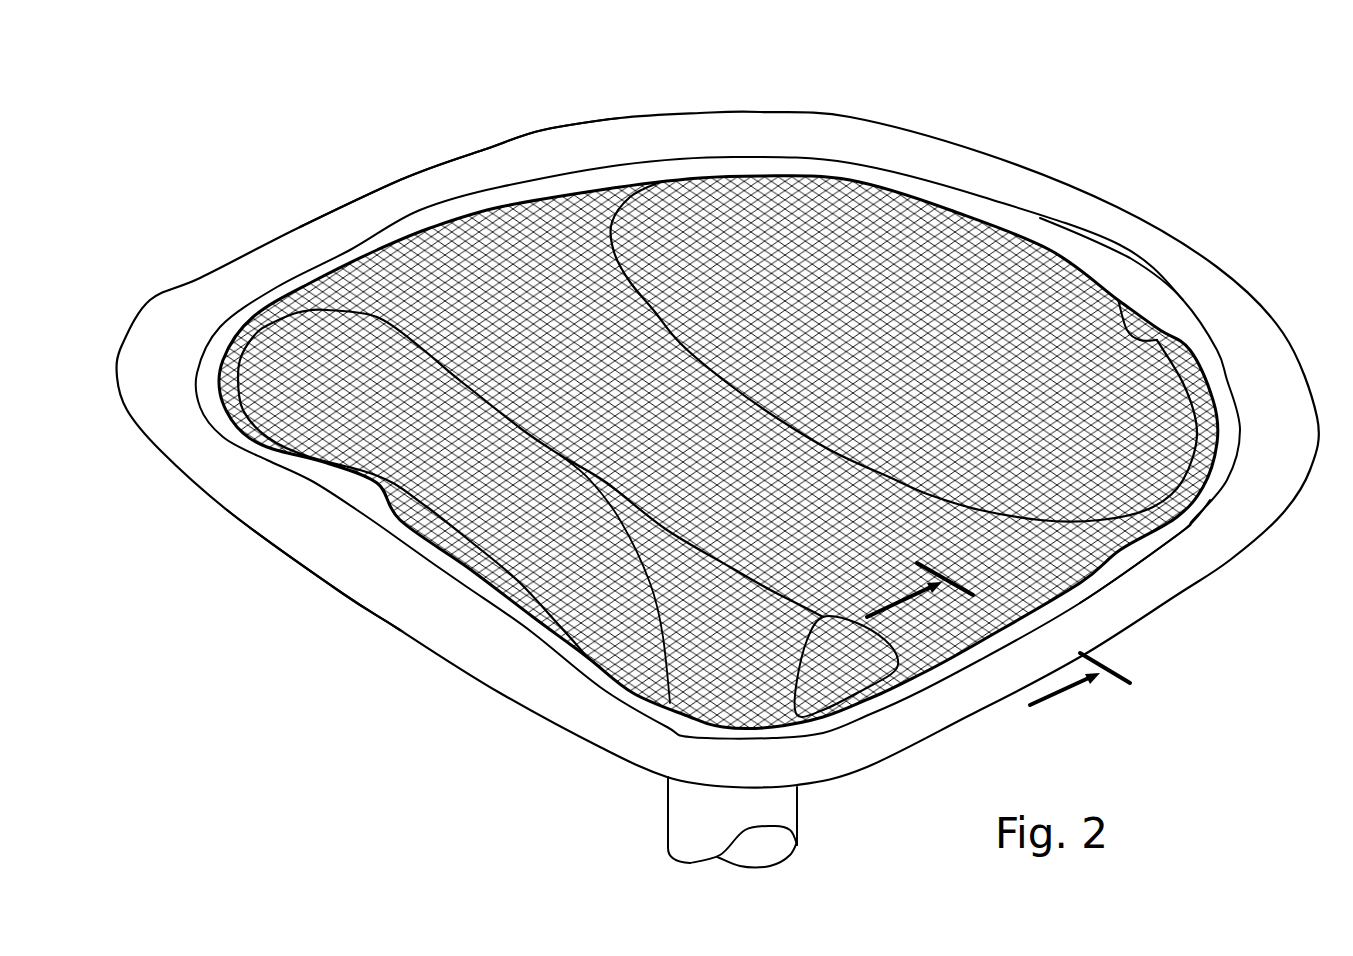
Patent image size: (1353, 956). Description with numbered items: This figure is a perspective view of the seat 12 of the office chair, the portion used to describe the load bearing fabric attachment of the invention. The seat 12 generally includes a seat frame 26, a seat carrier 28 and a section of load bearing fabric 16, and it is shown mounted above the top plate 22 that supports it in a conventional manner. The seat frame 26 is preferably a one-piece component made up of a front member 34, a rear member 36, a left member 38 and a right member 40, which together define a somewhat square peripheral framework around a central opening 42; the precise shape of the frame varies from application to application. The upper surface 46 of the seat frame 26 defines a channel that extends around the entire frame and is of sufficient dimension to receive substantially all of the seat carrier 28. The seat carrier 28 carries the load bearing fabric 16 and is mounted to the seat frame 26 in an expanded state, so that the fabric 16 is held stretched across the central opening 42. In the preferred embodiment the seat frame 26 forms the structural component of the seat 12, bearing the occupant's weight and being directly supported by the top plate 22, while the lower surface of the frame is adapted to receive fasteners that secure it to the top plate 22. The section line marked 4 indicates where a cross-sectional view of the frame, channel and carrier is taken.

The seat 12 is at (1140, 147).
The load bearing fabric 16 is at (892, 253).
The top plate 22 is at (677, 337).
The seat frame 26 is at (420, 163).
The seat carrier 28 is at (1190, 518).
The front member 34 is at (355, 582).
The rear member 36 is at (1123, 228).
The left member 38 is at (1170, 590).
The right member 40 is at (348, 215).
The central opening 42 is at (1157, 338).
The upper surface 46 is at (562, 142).
The section line 4- 4 is at (998, 628).